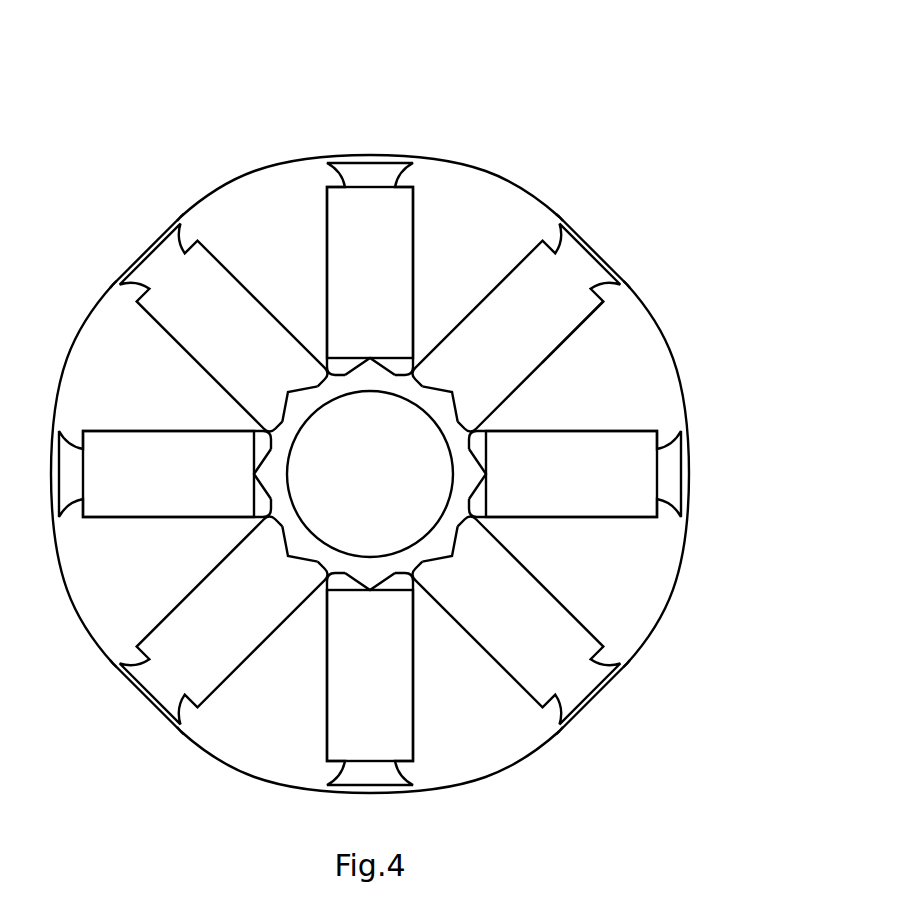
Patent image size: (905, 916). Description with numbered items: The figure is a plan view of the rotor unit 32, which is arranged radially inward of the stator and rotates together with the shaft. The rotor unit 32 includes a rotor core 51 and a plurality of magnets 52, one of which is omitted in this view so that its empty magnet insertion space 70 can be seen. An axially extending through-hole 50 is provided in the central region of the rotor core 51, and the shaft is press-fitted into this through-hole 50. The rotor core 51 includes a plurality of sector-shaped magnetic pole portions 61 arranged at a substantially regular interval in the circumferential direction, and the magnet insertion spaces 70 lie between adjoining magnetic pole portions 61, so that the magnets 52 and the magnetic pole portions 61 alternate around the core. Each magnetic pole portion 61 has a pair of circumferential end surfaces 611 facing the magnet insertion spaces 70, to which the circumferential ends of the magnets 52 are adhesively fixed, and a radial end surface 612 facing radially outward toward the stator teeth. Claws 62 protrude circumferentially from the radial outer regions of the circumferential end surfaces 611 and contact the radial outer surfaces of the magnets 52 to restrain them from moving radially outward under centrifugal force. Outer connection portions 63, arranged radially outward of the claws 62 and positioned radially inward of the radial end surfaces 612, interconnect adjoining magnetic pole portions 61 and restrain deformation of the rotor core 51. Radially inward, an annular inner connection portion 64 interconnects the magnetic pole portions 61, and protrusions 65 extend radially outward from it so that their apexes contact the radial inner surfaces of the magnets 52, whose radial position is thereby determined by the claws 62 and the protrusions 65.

The rotor unit 32 is at (289, 92).
The through-hole 50 is at (418, 497).
The rotor core 51 is at (214, 178).
The magnet 52 is at (373, 240).
The magnetic pole portion 61 is at (463, 240).
The circumferential end surface 611 is at (518, 338).
The radial end surface 612 is at (530, 215).
The claw 62 is at (550, 226).
The outer connection portion 63 is at (598, 250).
The inner connection portion 64 is at (278, 492).
The protrusion 65 is at (368, 362).
The magnet insertion space 70 is at (573, 350).